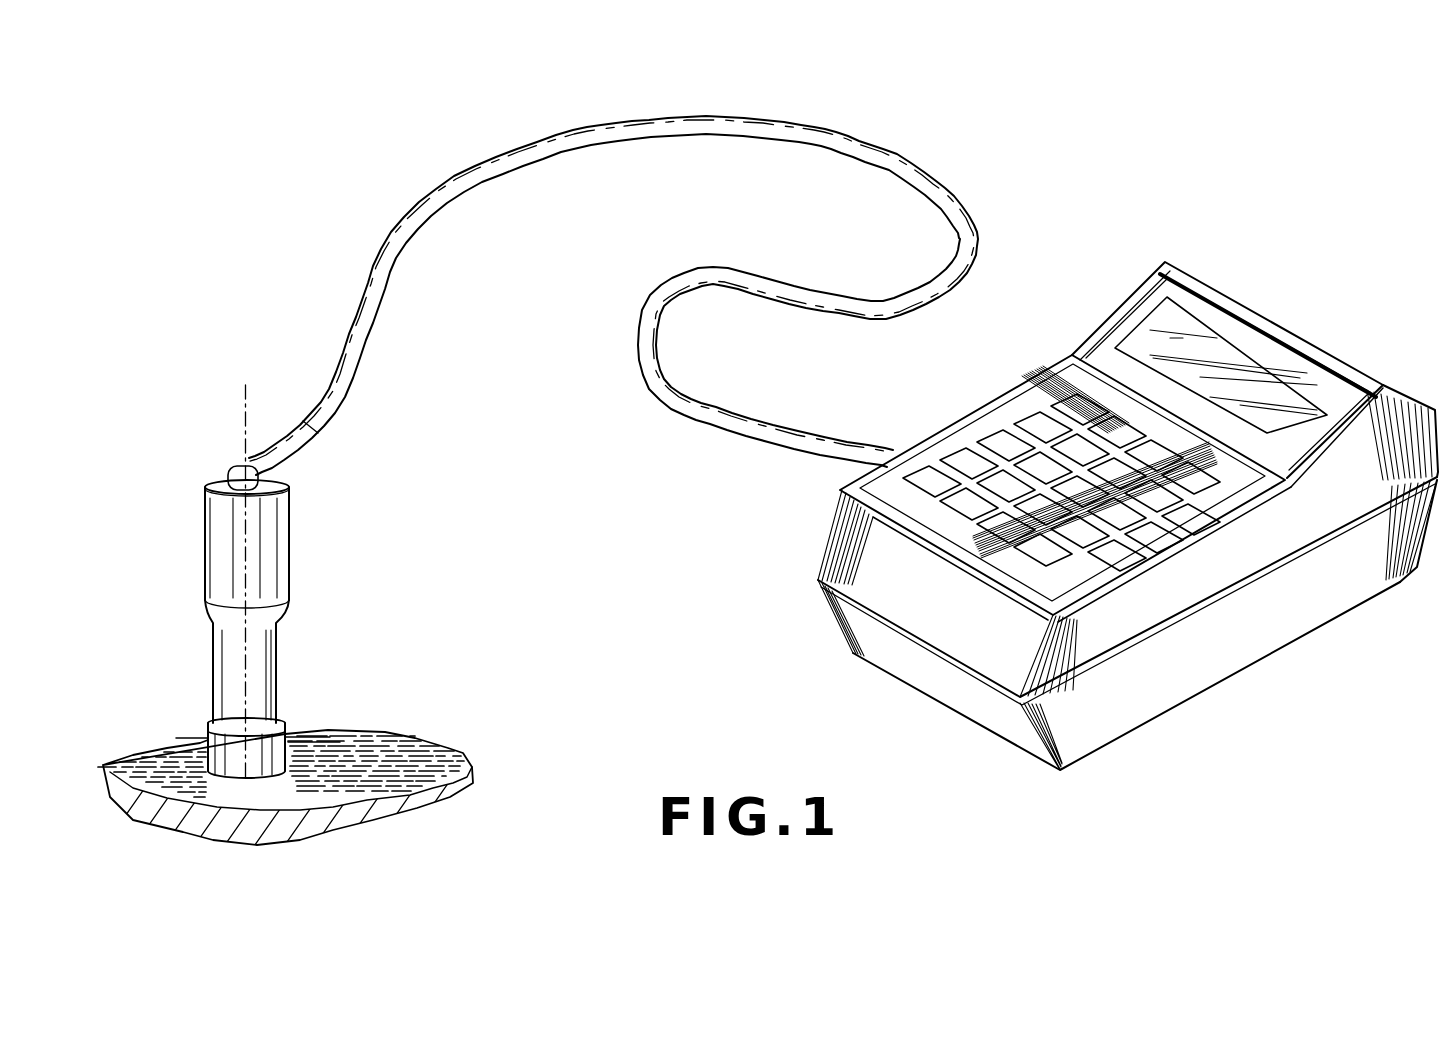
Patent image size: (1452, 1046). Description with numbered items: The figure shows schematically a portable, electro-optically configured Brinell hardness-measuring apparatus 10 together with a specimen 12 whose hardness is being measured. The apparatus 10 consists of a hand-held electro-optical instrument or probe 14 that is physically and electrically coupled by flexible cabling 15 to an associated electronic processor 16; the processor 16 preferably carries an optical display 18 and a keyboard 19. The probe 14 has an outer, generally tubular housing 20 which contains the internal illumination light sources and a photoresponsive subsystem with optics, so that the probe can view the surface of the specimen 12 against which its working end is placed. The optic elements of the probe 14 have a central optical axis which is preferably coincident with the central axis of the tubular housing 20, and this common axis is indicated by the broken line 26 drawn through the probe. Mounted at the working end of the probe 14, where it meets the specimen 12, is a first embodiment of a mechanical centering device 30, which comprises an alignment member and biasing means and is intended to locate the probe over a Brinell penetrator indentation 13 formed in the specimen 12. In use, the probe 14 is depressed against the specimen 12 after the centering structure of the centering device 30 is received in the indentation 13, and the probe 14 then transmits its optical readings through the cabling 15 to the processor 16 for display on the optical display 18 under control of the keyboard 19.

The Brinell hardness-measuring apparatus 10 is at (880, 137).
The specimen 12 is at (428, 733).
The indentation 13 is at (326, 723).
The probe 14 is at (294, 518).
The flexible cabling 15 is at (612, 124).
The electronic processor 16 is at (1307, 325).
The optical display 18 is at (1185, 317).
The keyboard 19 is at (1050, 403).
The outer tubular housing 20 is at (333, 633).
The central axis 26 is at (245, 398).
The centering device 30 is at (197, 740).